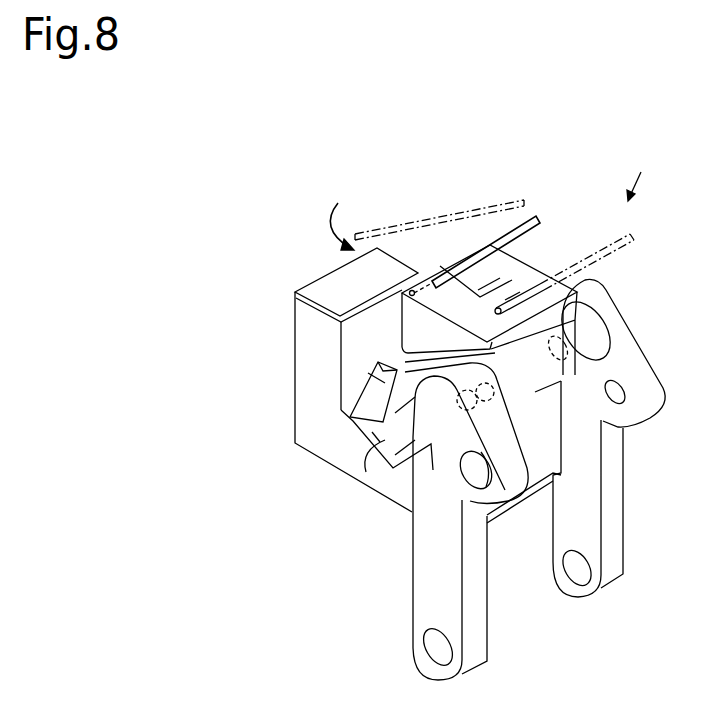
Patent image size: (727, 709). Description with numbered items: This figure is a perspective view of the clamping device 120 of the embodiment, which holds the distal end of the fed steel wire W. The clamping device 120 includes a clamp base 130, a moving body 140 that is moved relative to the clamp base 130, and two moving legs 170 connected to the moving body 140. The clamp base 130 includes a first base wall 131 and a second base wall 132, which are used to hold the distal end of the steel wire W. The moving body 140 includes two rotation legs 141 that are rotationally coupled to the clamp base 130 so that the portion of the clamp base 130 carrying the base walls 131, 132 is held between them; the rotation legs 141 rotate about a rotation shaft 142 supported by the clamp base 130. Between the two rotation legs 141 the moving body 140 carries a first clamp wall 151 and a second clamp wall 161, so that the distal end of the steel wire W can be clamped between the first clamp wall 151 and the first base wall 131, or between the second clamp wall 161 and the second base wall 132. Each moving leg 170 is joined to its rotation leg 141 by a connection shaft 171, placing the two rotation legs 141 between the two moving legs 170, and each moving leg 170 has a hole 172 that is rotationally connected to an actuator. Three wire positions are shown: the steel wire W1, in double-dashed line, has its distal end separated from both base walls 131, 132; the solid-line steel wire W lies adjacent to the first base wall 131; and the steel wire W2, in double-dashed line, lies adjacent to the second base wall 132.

The clamping device 120 is at (648, 172).
The clamp base 130 is at (300, 290).
The first base wall 131 is at (428, 284).
The second base wall 132 is at (527, 283).
The moving body 140 is at (362, 481).
The rotation legs 141 is at (460, 463).
The rotation shaft 142 is at (386, 462).
The first clamp wall 151 is at (380, 360).
The second clamp wall 161 is at (488, 285).
The moving legs 170 is at (448, 539).
The connection shaft 171 is at (500, 418).
The hole 172 is at (436, 655).
The steel wire W is at (481, 232).
The steel wire W1 is at (407, 224).
The steel wire W2 is at (586, 262).